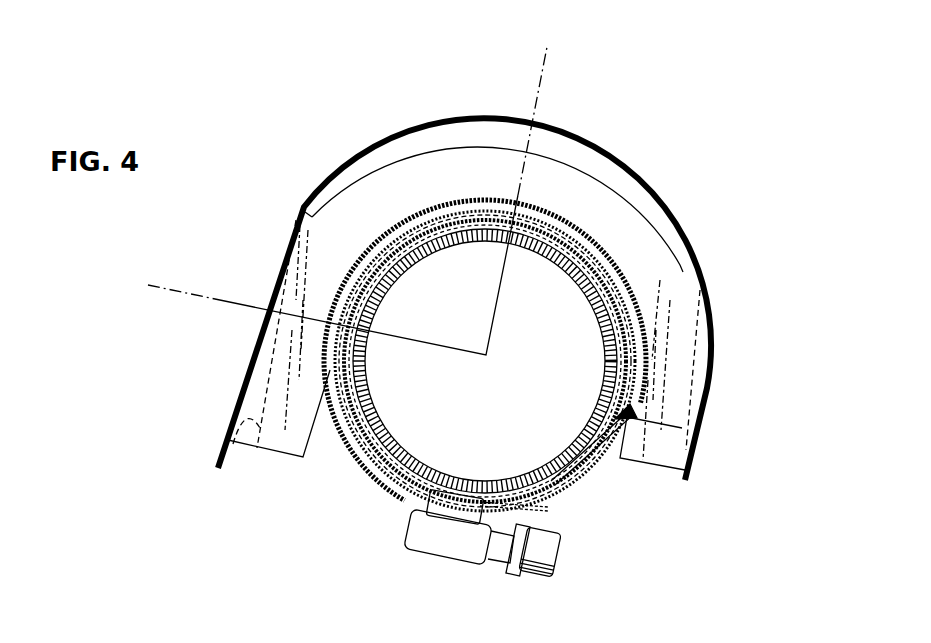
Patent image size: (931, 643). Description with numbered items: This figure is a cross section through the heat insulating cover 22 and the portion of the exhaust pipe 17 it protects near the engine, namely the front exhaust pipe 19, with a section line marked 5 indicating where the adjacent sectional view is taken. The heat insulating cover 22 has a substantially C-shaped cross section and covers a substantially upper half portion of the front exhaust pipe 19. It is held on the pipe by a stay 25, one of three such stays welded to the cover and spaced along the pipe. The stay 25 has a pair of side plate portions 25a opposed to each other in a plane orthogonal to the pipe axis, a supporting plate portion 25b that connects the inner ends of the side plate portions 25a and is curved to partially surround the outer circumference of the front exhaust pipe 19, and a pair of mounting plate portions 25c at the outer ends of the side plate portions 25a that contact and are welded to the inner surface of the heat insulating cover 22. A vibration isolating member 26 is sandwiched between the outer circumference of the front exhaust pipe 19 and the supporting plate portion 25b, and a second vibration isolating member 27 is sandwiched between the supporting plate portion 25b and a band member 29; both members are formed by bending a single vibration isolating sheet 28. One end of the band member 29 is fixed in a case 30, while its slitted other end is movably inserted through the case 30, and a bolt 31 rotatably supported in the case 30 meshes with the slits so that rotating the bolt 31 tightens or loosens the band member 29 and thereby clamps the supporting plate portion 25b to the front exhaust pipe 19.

The section line 5- 5 is at (162, 296).
The exhaust pipe 17 is at (627, 418).
The front exhaust pipe 19 is at (388, 457).
The heat insulating cover 22 is at (683, 228).
The stay 25 is at (297, 468).
The side plate portion 25a is at (678, 327).
The supporting plate portion 25b is at (570, 220).
The mounting plate portion 25c is at (257, 448).
The vibration isolating member 26 is at (415, 223).
The vibration isolating member 27 is at (477, 199).
The vibration isolating sheet 28 is at (485, 255).
The band member 29 is at (603, 447).
The case 30 is at (452, 544).
The bolt 31 is at (543, 578).